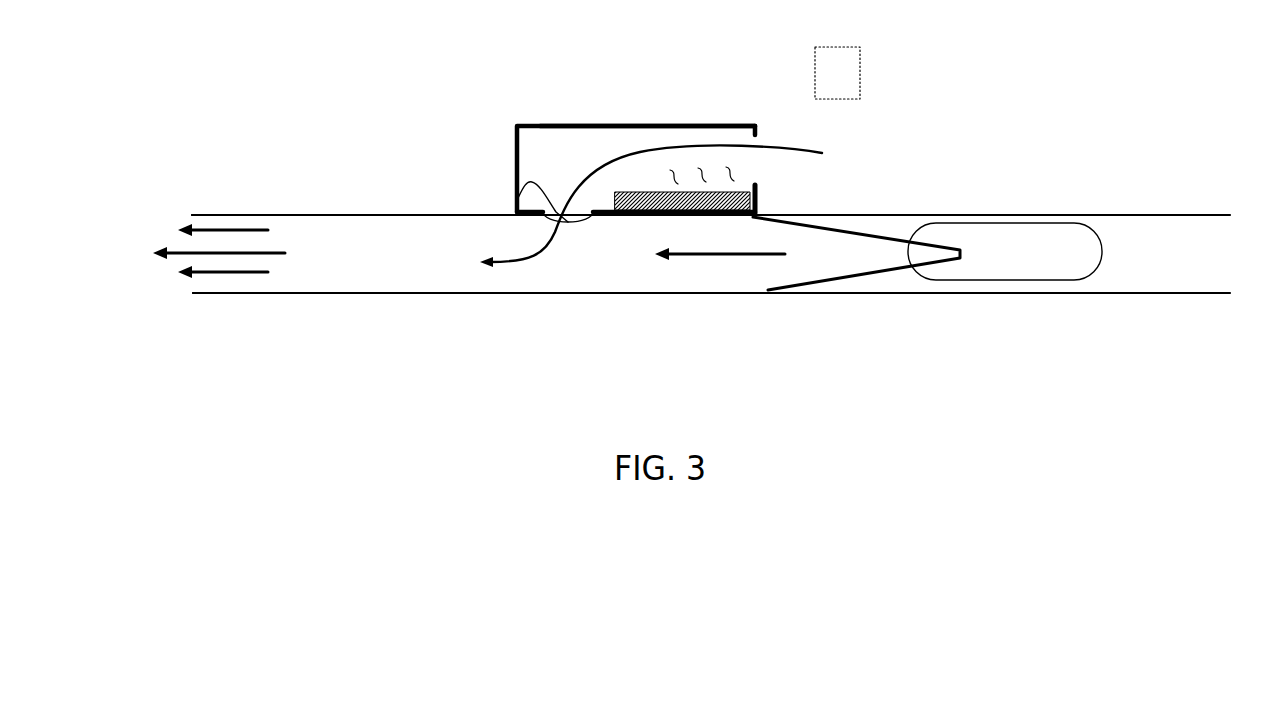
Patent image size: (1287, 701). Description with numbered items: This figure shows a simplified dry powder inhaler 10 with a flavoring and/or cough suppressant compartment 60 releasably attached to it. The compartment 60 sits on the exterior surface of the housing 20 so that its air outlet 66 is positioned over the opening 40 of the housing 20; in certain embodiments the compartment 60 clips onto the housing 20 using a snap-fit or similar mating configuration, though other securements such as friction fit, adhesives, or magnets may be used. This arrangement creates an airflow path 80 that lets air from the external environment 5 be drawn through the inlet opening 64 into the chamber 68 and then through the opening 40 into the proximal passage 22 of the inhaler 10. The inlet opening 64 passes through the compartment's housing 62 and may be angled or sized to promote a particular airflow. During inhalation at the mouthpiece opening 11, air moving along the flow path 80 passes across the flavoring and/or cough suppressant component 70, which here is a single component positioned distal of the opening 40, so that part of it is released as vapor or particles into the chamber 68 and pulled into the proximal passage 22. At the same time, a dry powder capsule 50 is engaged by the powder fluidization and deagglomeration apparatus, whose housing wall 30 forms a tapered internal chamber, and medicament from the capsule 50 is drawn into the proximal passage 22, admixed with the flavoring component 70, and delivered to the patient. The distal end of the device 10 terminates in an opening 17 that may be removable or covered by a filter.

The external environment 5 is at (829, 85).
The dry powder inhaler 10 is at (1167, 177).
The mouthpiece opening 11 is at (198, 283).
The distal opening 17 is at (1222, 263).
The housing 20 is at (317, 217).
The proximal passage 22 is at (385, 275).
The housing wall 30 is at (868, 232).
The opening 40 is at (517, 200).
The dry powder capsule 50 is at (997, 223).
The compartment 60 is at (512, 100).
The housing 62 is at (557, 125).
The inlet opening 64 is at (763, 138).
The air outlet 66 is at (586, 203).
The chamber 68 is at (543, 163).
The flavoring and/or cough suppressant component 70 is at (758, 200).
The airflow path 80 is at (664, 206).